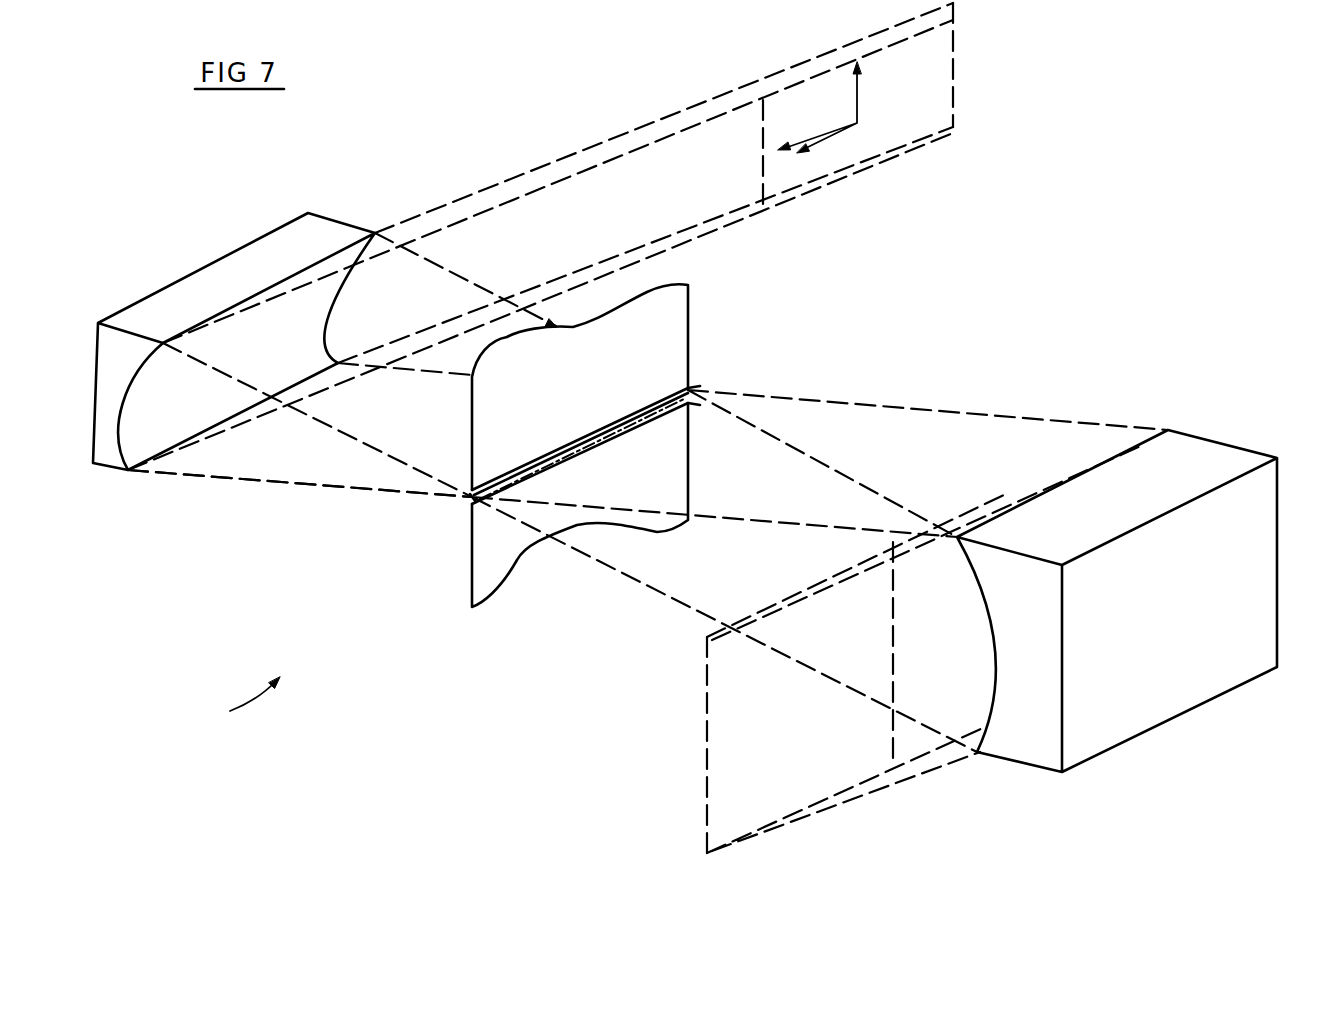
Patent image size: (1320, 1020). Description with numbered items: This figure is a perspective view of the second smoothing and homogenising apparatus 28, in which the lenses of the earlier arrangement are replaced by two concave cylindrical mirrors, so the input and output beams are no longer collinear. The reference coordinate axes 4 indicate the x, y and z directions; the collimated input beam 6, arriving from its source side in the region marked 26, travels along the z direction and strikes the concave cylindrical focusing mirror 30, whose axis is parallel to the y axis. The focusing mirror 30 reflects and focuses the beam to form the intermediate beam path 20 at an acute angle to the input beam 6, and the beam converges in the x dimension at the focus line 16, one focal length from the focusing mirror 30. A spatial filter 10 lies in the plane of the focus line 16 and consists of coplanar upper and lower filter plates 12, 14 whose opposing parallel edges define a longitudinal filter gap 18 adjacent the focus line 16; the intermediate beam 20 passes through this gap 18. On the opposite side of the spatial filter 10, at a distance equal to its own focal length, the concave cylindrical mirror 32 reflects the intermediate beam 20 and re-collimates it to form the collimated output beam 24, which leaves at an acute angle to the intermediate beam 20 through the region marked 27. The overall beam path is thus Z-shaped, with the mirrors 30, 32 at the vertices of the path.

The coordinate system 4 is at (850, 130).
The input beam path 6 is at (607, 141).
The spatial filter 10 is at (654, 483).
The upper filter plate 12 is at (675, 313).
The lower filter plate 14 is at (675, 435).
The focus line 16 is at (655, 407).
The longitudinal filter gap 18 is at (458, 508).
The intermediate beam path 20 is at (290, 487).
The output beam path 24 is at (918, 774).
The focal line 26 is at (942, 41).
The image plane 27 is at (724, 757).
The smoothing and homogenising apparatus 28 is at (222, 707).
The cylindrical focusing mirror 30 is at (110, 350).
The cylindrical mirror 32 is at (1027, 740).